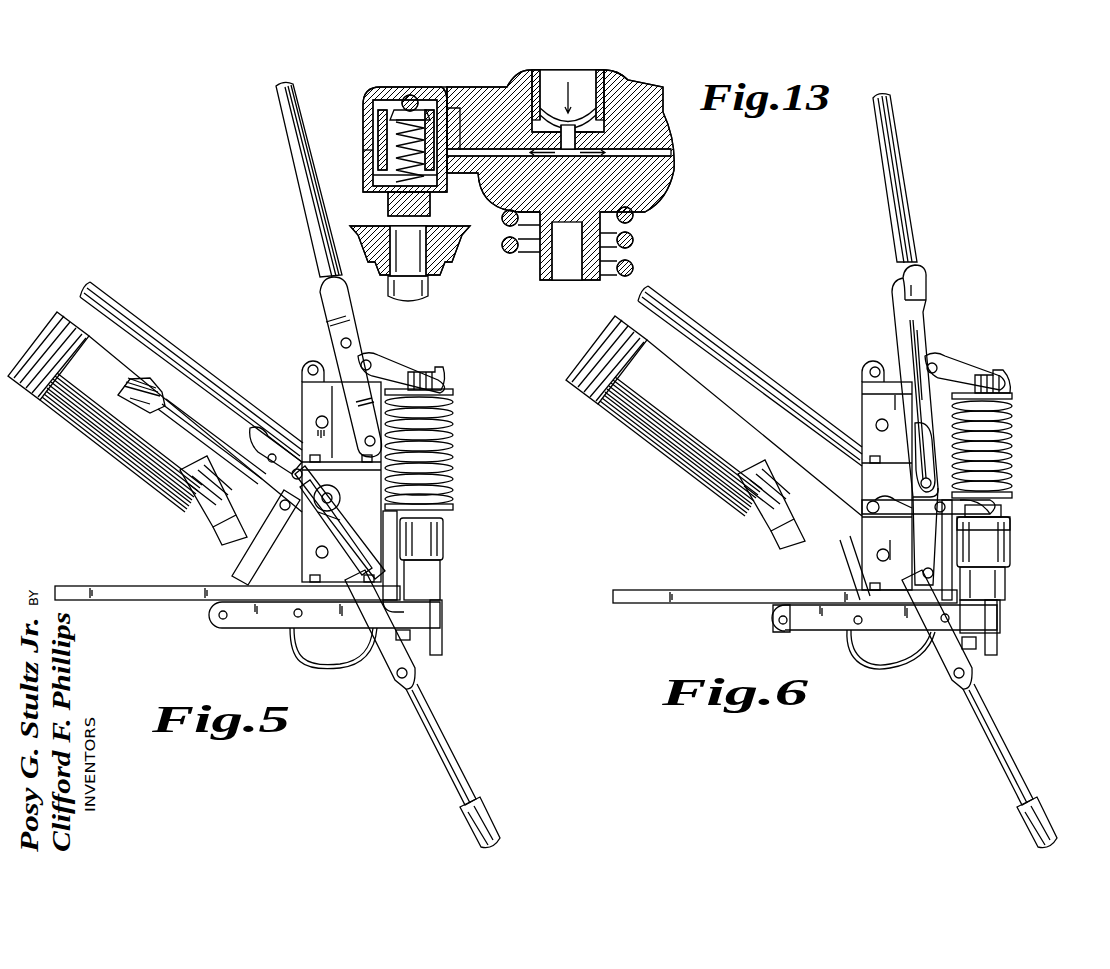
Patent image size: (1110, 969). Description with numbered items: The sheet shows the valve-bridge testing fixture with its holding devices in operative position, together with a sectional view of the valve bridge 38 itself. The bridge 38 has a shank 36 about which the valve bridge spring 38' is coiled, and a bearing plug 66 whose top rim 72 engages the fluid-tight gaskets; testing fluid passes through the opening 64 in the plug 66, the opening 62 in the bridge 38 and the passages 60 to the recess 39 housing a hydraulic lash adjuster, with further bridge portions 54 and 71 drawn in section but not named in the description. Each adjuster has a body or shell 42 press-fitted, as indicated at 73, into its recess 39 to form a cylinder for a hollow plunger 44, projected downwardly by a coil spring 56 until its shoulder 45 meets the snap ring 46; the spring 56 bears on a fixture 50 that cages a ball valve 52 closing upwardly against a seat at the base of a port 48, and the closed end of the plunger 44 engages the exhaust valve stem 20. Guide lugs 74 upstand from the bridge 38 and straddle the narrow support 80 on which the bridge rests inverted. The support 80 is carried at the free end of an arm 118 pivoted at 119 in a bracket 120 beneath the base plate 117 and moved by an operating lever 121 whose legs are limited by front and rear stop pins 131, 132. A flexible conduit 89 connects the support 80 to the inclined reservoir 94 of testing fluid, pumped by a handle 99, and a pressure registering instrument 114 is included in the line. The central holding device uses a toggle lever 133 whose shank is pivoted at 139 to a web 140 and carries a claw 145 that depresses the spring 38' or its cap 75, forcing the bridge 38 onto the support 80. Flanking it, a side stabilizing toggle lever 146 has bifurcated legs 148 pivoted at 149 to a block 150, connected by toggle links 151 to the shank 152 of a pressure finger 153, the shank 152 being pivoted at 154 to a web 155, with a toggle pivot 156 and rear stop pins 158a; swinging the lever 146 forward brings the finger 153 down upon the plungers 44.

In FIG. 13, the exhaust valve stem 20 is at (428, 303).
In FIG. 13, the shank 36 is at (552, 280).
In FIG. 13, the valve bridge 38 is at (571, 171).
In FIG. 6, the valve bridge 38 is at (1004, 542).
In FIG. 13, the valve bridge spring 38' is at (590, 241).
In FIG. 5, the valve bridge spring 38' is at (437, 449).
In FIG. 6, the valve bridge spring 38' is at (1004, 445).
In FIG. 13, the recess 39 is at (449, 90).
In FIG. 13, the body or shell 42 is at (432, 95).
In FIG. 6, the body or shell 42 is at (1012, 533).
In FIG. 13, the plunger 44 is at (378, 128).
In FIG. 6, the plunger 44 is at (1006, 523).
In FIG. 13, the shoulder 45 is at (375, 177).
In FIG. 13, the snap ring 46 is at (413, 238).
In FIG. 13, the port 48 is at (410, 95).
In FIG. 13, the fixture 50 is at (448, 120).
In FIG. 13, the ball valve 52 is at (400, 96).
In FIG. 13, the cap 54 is at (368, 100).
In FIG. 13, the coil spring 56 is at (392, 197).
In FIG. 13, the passages 60 is at (664, 153).
In FIG. 13, the opening 62 is at (600, 145).
In FIG. 13, the opening 64 is at (530, 118).
In FIG. 13, the bearing plug 66 is at (571, 112).
In FIG. 13, the boss 71 is at (612, 82).
In FIG. 13, the top rim 72 is at (550, 78).
In FIG. 13, the press fit 73 is at (365, 160).
In FIG. 13, the guide lugs 74 is at (585, 80).
In FIG. 5, the guide lugs 74 is at (440, 583).
In FIG. 6, the guide lugs 74 is at (1003, 580).
In FIG. 5, the cap 75 is at (446, 386).
In FIG. 6, the cap 75 is at (1008, 390).
In FIG. 6, the support 80 is at (995, 602).
In FIG. 5, the flexible conduit 89 is at (355, 665).
In FIG. 6, the flexible conduit 89 is at (891, 649).
In FIG. 5, the inclined reservoir 94 is at (75, 406).
In FIG. 6, the inclined reservoir 94 is at (668, 438).
In FIG. 5, the handle 99 is at (122, 318).
In FIG. 6, the handle 99 is at (722, 340).
In FIG. 5, the pressure registering instrument 114 is at (207, 505).
In FIG. 6, the pressure registering instrument 114 is at (760, 500).
In FIG. 5, the base plate 117 is at (148, 592).
In FIG. 6, the base plate 117 is at (645, 602).
In FIG. 5, the arm 118 is at (270, 622).
In FIG. 6, the arm 118 is at (840, 630).
In FIG. 6, the pivot 119 is at (782, 625).
In FIG. 6, the bracket 120 is at (772, 613).
In FIG. 5, the operating lever 121 is at (440, 760).
In FIG. 6, the operating lever 121 is at (990, 748).
In FIG. 6, the front stop pins 131 is at (964, 619).
In FIG. 6, the rear stop pins 132 is at (877, 619).
In FIG. 5, the toggle lever 133 is at (298, 174).
In FIG. 6, the toggle lever 133 is at (902, 208).
In FIG. 5, the pivot 139 is at (312, 362).
In FIG. 6, the pivot 139 is at (873, 371).
In FIG. 5, the web 140 is at (303, 378).
In FIG. 6, the web 140 is at (887, 486).
In FIG. 5, the claw 145 is at (405, 375).
In FIG. 6, the claw 145 is at (982, 376).
In FIG. 5, the side stabilizing toggle lever 146 is at (178, 394).
In FIG. 6, the side stabilizing toggle lever 146 is at (918, 340).
In FIG. 5, the bifurcated legs 148 is at (342, 543).
In FIG. 6, the pivot 149 is at (921, 577).
In FIG. 5, the block 150 is at (364, 540).
In FIG. 6, the block 150 is at (867, 560).
In FIG. 5, the toggle links 151 is at (283, 510).
In FIG. 5, the shank 152 is at (318, 488).
In FIG. 6, the shank 152 is at (896, 502).
In FIG. 5, the pressure finger 153 is at (250, 438).
In FIG. 6, the pressure finger 153 is at (1000, 506).
In FIG. 5, the pivot 154 is at (332, 499).
In FIG. 5, the web 155 is at (338, 512).
In FIG. 6, the toggle pivot 156 is at (922, 478).
In FIG. 5, the rear stop pins 158a is at (331, 561).
In FIG. 6, the rear stop pins 158a is at (880, 553).